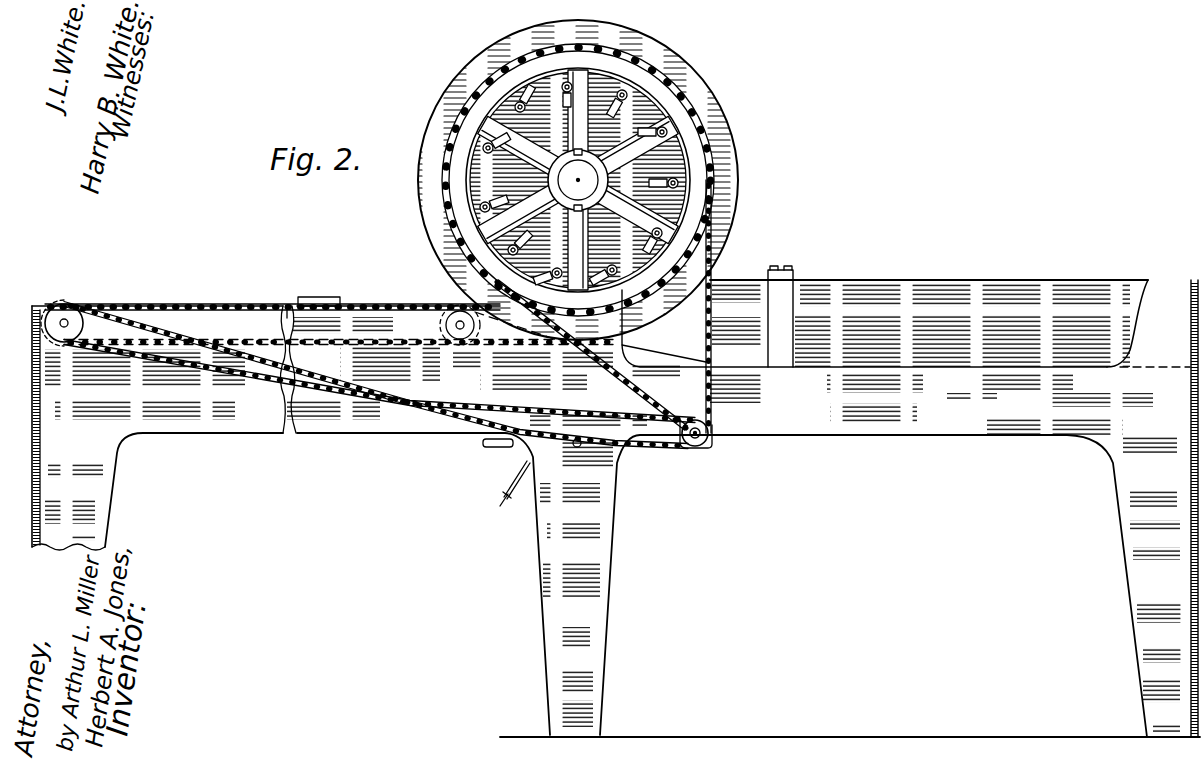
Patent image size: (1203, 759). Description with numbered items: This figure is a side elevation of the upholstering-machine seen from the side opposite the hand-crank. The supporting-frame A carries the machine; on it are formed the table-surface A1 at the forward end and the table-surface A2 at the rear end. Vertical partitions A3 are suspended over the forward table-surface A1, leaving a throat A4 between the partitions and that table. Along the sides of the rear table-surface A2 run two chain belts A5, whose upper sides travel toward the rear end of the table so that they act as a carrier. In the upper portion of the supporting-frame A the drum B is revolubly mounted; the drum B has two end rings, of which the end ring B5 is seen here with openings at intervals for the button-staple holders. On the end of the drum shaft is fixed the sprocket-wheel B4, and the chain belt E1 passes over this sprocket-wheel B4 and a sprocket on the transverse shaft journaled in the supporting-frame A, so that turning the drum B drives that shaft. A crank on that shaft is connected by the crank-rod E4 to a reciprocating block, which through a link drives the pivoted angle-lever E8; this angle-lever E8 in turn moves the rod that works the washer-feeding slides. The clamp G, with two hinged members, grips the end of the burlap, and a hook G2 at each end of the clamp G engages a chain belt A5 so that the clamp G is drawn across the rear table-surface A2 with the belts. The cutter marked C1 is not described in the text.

The supporting-frame A is at (115, 499).
The table-surface A1 is at (1070, 367).
The table-surface A2 is at (46, 300).
The vertical partitions A3 is at (948, 323).
The throat A4 is at (977, 349).
The chain belts A5 is at (250, 297).
The drum B is at (578, 180).
The sprocket-wheel B4 is at (738, 165).
The end ring B5 is at (707, 84).
The cutter C1 is at (578, 184).
The chain belt E1 is at (735, 203).
The crank-rod E4 is at (678, 448).
The angle-lever E8 is at (483, 443).
The clamp G is at (318, 298).
The hook G2 is at (290, 306).